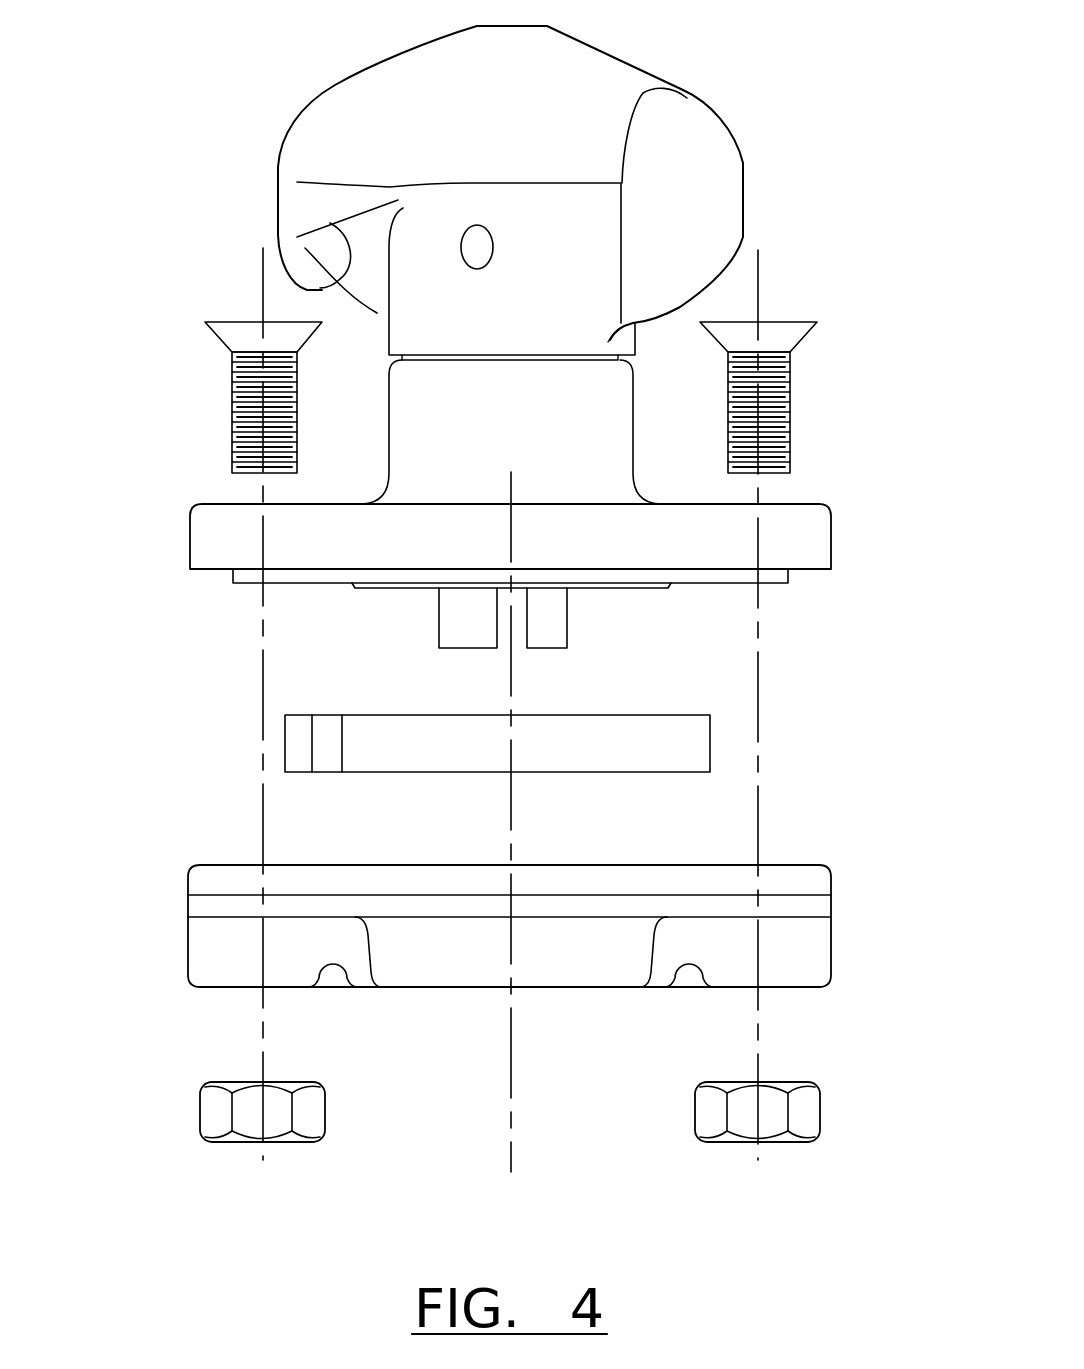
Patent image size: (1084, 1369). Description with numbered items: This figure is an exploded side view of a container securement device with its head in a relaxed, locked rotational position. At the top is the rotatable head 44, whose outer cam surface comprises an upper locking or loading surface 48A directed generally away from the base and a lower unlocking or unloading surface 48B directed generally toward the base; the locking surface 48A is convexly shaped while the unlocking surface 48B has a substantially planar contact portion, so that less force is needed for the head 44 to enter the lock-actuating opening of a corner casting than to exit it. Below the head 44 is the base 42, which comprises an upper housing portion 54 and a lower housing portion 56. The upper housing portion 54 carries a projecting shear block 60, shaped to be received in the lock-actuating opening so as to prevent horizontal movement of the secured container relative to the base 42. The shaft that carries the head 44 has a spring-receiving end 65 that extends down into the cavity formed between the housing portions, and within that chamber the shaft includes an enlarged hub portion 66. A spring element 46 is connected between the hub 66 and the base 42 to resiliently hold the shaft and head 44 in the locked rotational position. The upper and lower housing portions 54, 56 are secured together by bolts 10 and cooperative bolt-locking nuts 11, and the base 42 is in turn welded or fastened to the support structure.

The upper locking or loading surface 48A is at (336, 84).
The lower unlocking or unloading surface 48B is at (280, 272).
The head 44 is at (683, 90).
The bolts 10 is at (238, 332).
The shear block 60 is at (466, 413).
The upper housing portion 54 is at (210, 551).
The enlarged hub portion 66 is at (628, 588).
The spring-receiving end 65 is at (447, 641).
The spring element 46 is at (285, 750).
The base 42 is at (808, 548).
The lower housing portion 56 is at (207, 888).
The bolt-locking nuts 11 is at (218, 1115).